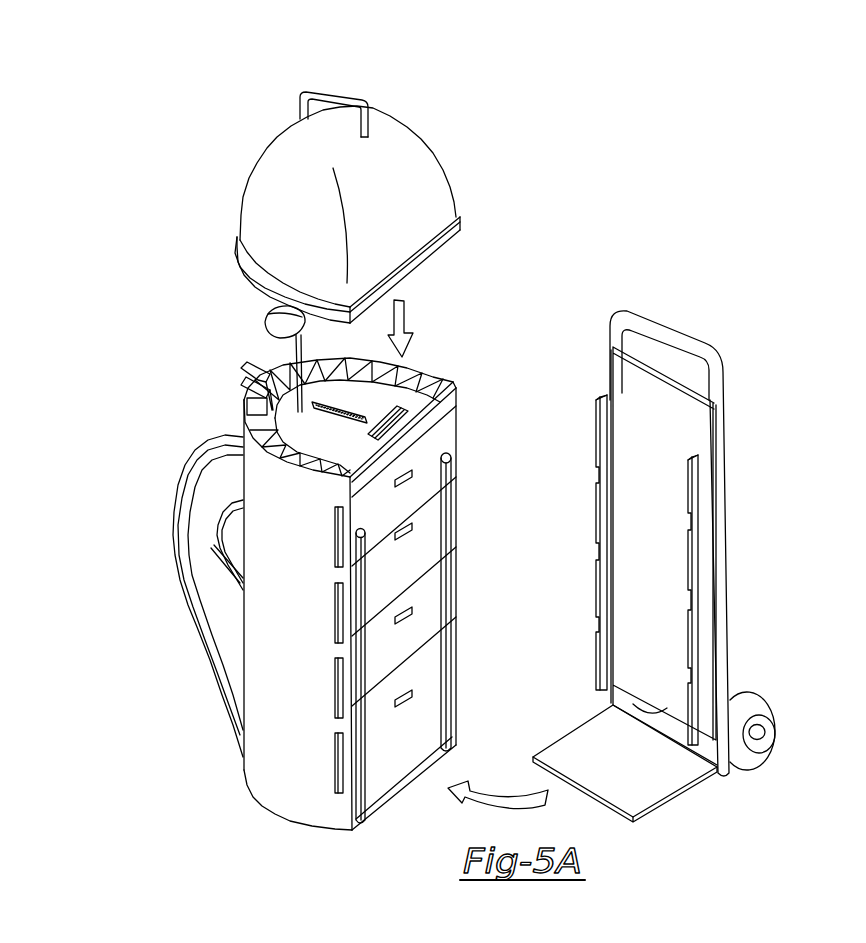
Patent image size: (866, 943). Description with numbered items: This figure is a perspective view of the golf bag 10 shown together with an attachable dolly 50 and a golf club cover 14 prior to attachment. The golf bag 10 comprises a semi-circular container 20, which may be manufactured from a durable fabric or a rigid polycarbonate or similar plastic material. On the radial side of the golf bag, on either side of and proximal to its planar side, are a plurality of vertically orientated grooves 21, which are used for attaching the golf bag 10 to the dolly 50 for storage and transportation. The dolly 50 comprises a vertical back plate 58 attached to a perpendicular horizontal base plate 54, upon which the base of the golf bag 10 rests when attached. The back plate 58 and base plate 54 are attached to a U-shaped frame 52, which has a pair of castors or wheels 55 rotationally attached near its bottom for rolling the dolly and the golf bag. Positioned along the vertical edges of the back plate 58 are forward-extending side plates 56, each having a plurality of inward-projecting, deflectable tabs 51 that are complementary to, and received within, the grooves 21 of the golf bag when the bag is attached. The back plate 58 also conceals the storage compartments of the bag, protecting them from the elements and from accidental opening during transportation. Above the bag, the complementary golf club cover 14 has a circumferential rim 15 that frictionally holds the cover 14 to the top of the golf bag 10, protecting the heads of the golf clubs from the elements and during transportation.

The golf bag 10 is at (236, 339).
The golf club cover 14 is at (437, 128).
The circumferential rim 15 is at (445, 240).
The semi-circular container 20 is at (257, 760).
The vertically orientated grooves 21 is at (335, 537).
The dolly 50 is at (695, 318).
The deflectable tabs 51 is at (597, 446).
The U-shaped frame 52 is at (724, 377).
The horizontal base plate 54 is at (562, 755).
The wheels 55 is at (783, 737).
The side plates 56 is at (693, 457).
The vertical back plate 58 is at (620, 363).